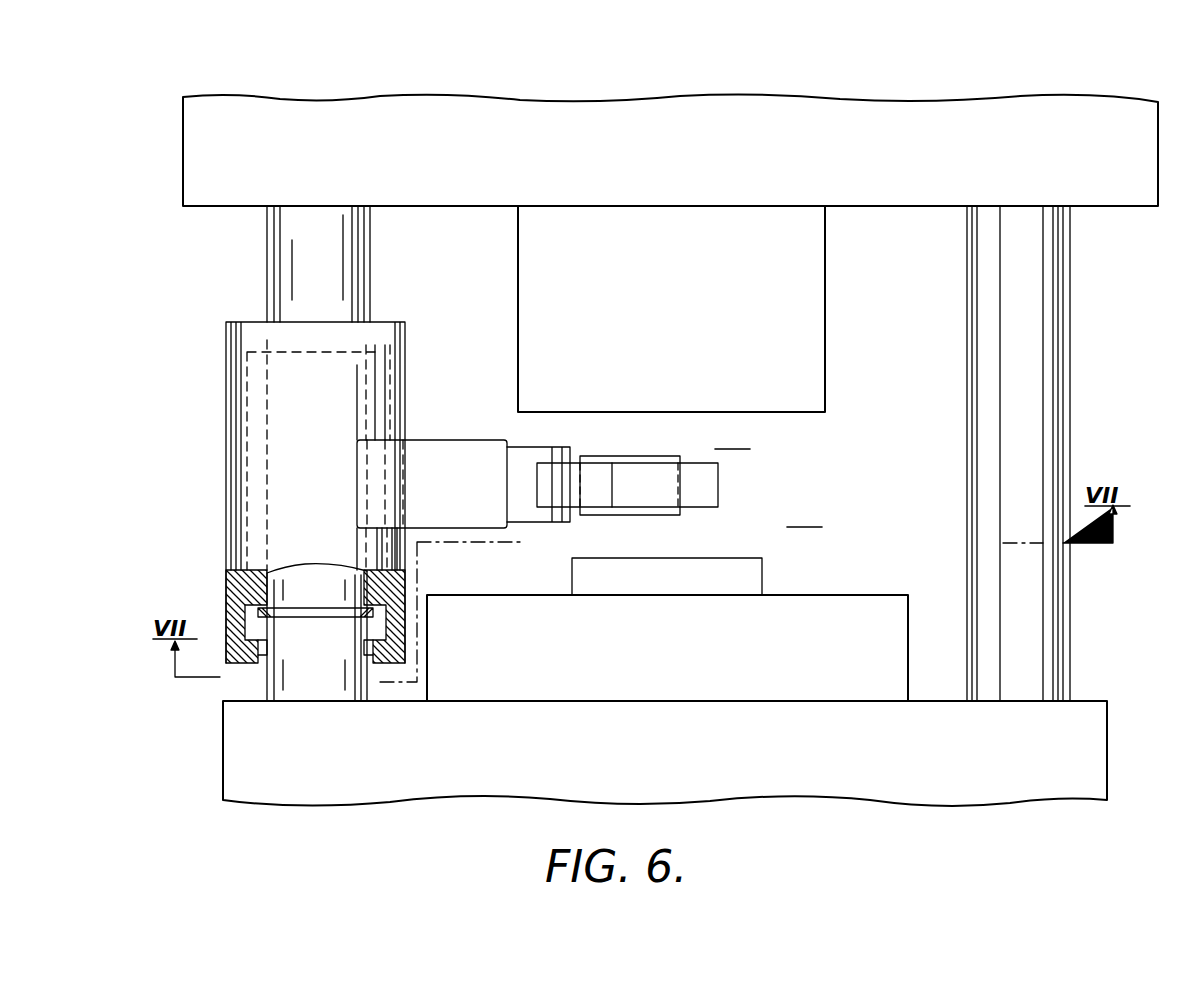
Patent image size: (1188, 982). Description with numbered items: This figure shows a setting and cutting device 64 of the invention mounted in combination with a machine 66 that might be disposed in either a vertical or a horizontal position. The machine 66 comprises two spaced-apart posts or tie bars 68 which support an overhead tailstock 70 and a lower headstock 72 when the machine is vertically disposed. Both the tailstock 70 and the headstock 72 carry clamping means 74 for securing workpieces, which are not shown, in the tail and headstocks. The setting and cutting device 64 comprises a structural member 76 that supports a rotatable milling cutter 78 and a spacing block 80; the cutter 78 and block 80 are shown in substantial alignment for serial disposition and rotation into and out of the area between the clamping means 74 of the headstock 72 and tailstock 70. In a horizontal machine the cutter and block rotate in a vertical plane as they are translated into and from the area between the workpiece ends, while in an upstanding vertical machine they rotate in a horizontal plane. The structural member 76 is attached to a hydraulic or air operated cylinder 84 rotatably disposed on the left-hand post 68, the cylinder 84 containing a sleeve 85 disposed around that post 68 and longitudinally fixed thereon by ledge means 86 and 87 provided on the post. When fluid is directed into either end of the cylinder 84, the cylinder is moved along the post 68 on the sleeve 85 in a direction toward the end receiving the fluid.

The setting and cutting device 64 is at (732, 436).
The machine 66 is at (804, 514).
The posts or tie bars 68 is at (370, 262).
The tailstock 70 is at (844, 112).
The headstock 72 is at (846, 597).
The clamping means 74 is at (825, 358).
The structural member 76 is at (441, 452).
The milling cutter 78 is at (633, 462).
The spacing block 80 is at (697, 492).
The cylinder 84 is at (226, 443).
The sleeve 85 is at (237, 592).
The ledge means 86 is at (322, 618).
The ledge means 87 is at (352, 350).